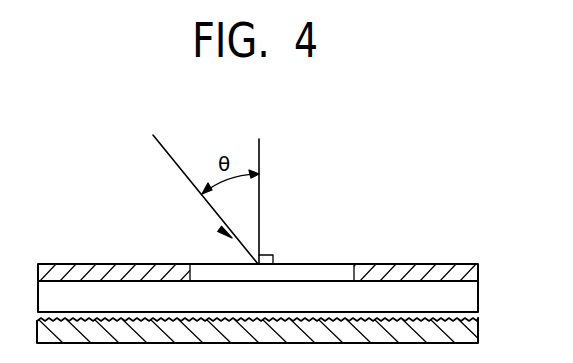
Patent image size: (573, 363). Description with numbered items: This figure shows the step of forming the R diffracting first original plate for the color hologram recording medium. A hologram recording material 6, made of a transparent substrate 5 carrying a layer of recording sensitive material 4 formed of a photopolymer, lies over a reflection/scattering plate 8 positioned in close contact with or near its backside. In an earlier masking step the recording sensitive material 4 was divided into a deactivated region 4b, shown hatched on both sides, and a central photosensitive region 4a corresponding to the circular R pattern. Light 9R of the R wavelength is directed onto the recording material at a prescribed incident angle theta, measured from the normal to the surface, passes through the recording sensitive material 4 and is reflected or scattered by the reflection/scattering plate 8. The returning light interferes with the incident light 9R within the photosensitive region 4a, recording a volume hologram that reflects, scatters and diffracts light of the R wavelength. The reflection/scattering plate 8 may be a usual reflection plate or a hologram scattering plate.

The recording sensitive material 4 is at (479, 267).
The photosensitive region 4a is at (318, 272).
The deactivated region 4b is at (100, 271).
The transparent substrate 5 is at (472, 300).
The hologram recording material 6 is at (531, 247).
The reflection/scattering plate 8 is at (479, 330).
The light of the R wavelength 9R is at (155, 139).